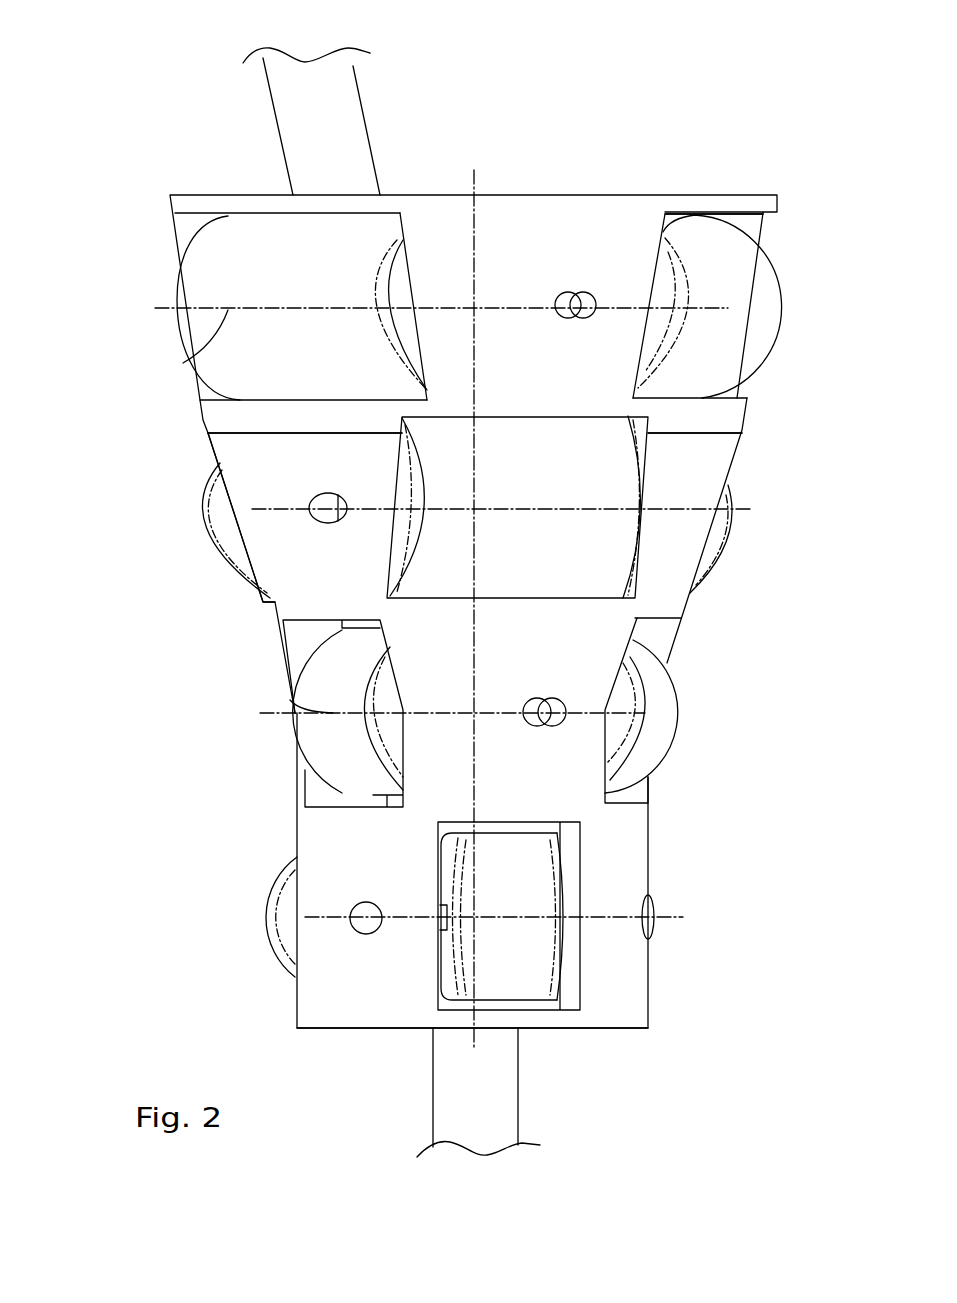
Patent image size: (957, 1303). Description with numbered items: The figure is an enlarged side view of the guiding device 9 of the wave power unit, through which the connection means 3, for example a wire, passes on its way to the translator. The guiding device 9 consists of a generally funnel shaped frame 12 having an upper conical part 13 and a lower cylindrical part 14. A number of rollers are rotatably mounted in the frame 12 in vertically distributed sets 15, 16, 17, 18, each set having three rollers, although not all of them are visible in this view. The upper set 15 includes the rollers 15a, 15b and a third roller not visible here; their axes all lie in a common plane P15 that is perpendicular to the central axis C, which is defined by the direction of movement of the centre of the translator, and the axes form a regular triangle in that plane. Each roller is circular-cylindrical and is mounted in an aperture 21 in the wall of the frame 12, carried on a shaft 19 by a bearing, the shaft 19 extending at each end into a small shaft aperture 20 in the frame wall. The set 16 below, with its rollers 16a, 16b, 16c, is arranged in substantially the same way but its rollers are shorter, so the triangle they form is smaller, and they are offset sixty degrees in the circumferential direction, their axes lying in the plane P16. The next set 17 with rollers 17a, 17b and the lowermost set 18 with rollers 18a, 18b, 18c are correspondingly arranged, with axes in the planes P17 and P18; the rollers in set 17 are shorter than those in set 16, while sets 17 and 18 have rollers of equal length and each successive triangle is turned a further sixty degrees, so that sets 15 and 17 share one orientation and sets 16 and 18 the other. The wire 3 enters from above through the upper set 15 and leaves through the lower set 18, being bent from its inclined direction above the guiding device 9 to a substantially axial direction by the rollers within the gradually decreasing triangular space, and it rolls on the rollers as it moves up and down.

The connection means 3 is at (350, 106).
The guiding device 9 is at (773, 710).
The frame 12 is at (273, 613).
The upper conical part 13 is at (232, 444).
The lower cylindrical part 14 is at (303, 833).
The upper set of rollers 15 is at (116, 313).
The roller 15a is at (197, 283).
The roller 15b is at (760, 273).
The common plane P15 is at (193, 357).
The set of rollers 16 is at (128, 513).
The roller 16a is at (225, 507).
The roller 16b is at (734, 449).
The roller 16c is at (727, 547).
The common plane P16 is at (288, 510).
The set of rollers 17 is at (130, 718).
The roller 17a is at (300, 703).
The roller 17b is at (667, 685).
The common plane P17 is at (333, 713).
The lowermost set of rollers 18 is at (149, 920).
The roller 18a is at (287, 900).
The roller 18b is at (550, 880).
The roller 18c is at (655, 905).
The common plane P18 is at (347, 923).
The shaft 19 is at (585, 293).
The shaft aperture 20 is at (568, 292).
The aperture 21 is at (690, 208).
The central axis C is at (486, 172).